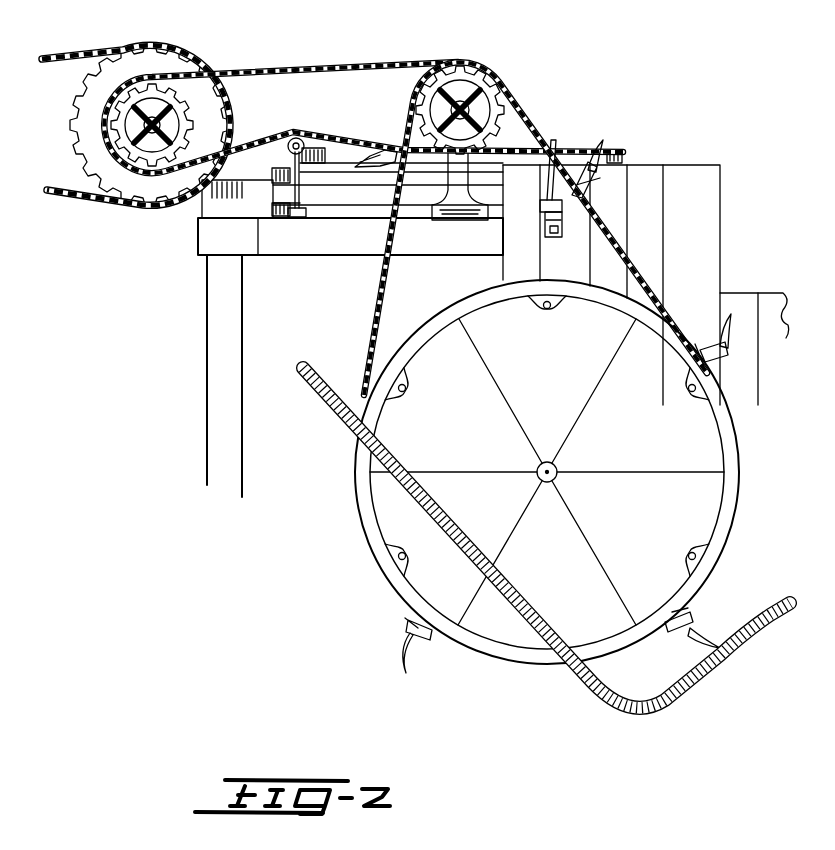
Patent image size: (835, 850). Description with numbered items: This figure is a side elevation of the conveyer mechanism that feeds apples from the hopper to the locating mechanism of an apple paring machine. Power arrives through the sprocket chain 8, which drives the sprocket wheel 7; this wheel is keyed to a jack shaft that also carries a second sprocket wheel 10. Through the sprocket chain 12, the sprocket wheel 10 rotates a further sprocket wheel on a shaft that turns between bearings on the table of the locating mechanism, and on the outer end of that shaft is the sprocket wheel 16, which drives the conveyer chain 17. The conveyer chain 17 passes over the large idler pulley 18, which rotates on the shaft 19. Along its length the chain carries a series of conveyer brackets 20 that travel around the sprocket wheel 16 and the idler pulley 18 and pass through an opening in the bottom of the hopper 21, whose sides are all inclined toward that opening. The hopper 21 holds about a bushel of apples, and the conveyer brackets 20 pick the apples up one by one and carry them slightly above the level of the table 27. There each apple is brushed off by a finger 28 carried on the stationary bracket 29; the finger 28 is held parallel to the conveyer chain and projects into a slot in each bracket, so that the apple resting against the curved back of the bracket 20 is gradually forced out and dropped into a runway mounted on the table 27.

The sprocket wheel 7 is at (88, 108).
The sprocket chain 8 is at (70, 50).
The sprocket wheel 10 is at (193, 120).
The sprocket chain 12 is at (297, 72).
The sprocket wheel 16 is at (470, 73).
The conveyer chain 17 is at (520, 109).
The idler pulley 18 is at (372, 527).
The shaft 19 is at (560, 466).
The conveyer brackets 20 is at (590, 182).
The hopper 21 is at (340, 420).
The table 27 is at (212, 238).
The finger 28 is at (548, 171).
The stationary bracket 29 is at (560, 217).